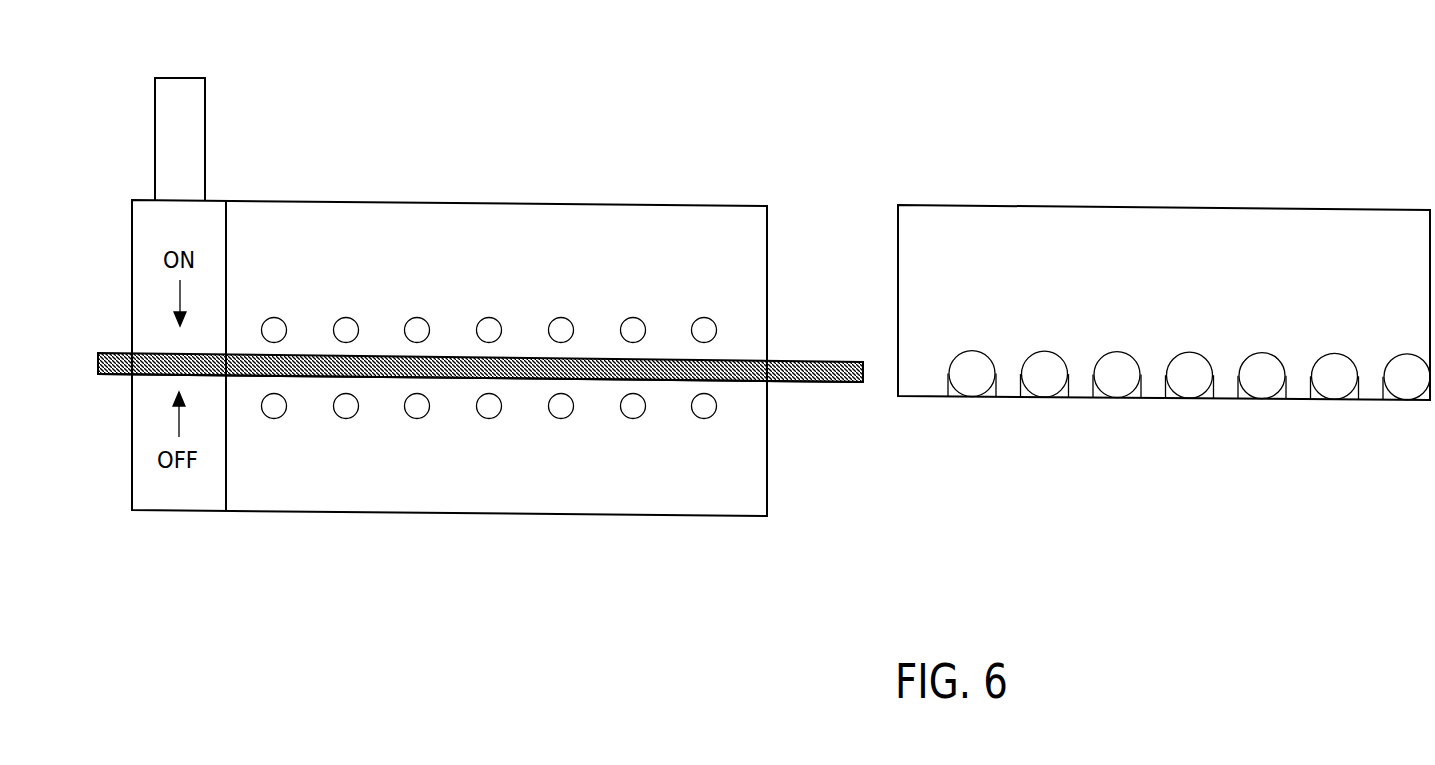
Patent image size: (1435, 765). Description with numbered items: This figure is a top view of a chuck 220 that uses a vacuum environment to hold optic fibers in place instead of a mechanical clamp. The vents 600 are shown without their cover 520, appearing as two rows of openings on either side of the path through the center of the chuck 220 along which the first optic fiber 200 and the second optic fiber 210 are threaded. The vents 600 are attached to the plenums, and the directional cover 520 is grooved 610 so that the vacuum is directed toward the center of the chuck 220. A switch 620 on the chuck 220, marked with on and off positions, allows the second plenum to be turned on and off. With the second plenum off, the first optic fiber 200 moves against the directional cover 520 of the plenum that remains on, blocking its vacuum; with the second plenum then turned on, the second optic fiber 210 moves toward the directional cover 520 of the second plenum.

The first optic fiber 200 is at (813, 361).
The second optic fiber 210 is at (835, 384).
The chuck 220 is at (243, 200).
The directional cover 520 is at (930, 205).
The vents 600 is at (419, 318).
The grooves 610 is at (975, 397).
The switch 620 is at (177, 78).